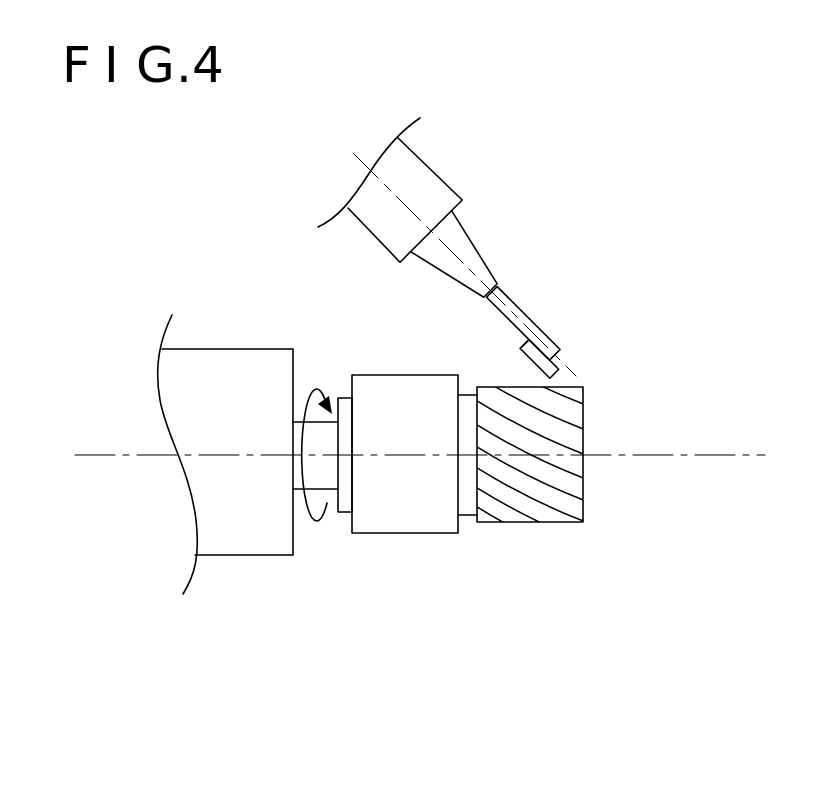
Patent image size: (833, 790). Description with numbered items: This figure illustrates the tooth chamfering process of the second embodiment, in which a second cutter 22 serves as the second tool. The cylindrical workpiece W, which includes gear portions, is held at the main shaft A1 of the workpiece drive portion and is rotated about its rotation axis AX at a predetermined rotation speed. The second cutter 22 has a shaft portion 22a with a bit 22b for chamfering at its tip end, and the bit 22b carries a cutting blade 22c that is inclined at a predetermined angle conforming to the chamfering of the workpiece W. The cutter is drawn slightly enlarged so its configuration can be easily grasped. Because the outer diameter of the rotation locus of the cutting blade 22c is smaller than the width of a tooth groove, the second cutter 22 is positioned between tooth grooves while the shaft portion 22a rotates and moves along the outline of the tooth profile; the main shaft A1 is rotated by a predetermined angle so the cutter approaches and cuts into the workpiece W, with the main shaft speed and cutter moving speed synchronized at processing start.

The main shaft A1 is at (238, 372).
The workpiece W is at (385, 397).
The second cutter 22 is at (408, 178).
The shaft portion 22a is at (525, 315).
The bit 22b is at (562, 367).
The cutting blade 22c is at (527, 354).
The rotation axis AX is at (443, 459).